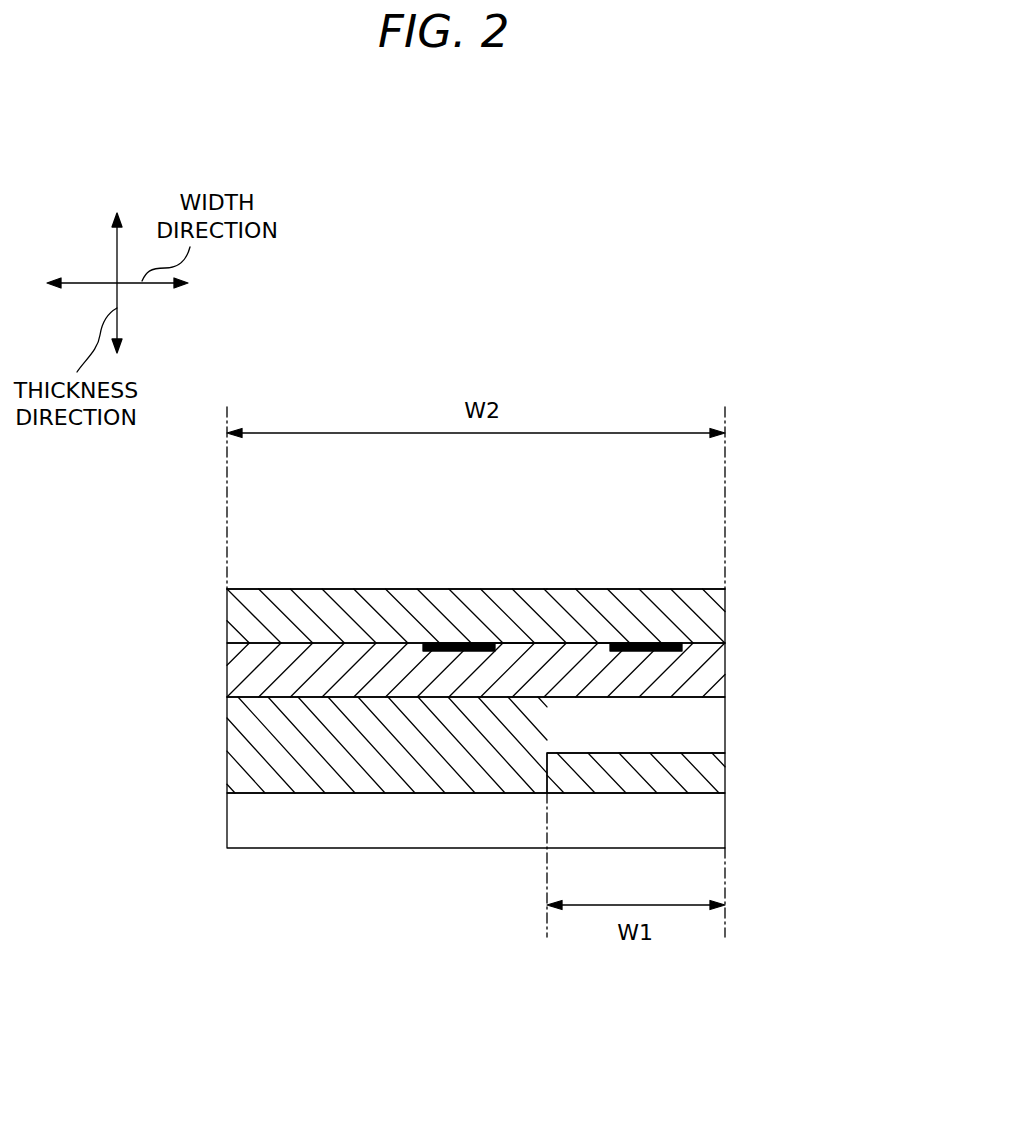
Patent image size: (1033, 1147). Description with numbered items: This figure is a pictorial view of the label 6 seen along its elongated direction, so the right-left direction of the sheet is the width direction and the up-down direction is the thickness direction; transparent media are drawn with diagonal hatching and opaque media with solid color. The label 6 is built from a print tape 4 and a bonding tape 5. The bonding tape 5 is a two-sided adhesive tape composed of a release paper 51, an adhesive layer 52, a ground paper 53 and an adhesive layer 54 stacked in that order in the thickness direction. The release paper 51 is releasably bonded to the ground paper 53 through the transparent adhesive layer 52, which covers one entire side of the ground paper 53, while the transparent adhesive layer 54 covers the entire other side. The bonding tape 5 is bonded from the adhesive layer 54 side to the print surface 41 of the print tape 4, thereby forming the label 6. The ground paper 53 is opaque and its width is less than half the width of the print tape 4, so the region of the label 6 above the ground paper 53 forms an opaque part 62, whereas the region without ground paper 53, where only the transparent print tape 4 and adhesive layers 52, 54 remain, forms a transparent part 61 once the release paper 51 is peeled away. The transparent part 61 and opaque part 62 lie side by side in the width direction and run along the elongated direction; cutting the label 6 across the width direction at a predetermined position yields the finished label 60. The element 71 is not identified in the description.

The print tape 4 is at (710, 613).
The bonding tape 5 is at (514, 661).
The label 6 is at (755, 570).
The label 60 is at (529, 661).
The print surface 41 is at (535, 650).
The release paper 51 is at (518, 820).
The adhesive layer 52 is at (710, 768).
The ground paper 53 is at (705, 727).
The adhesive layer 54 is at (697, 680).
The transparent part 61 is at (365, 580).
The opaque part 62 is at (637, 578).
The conductive portion 71 is at (421, 657).